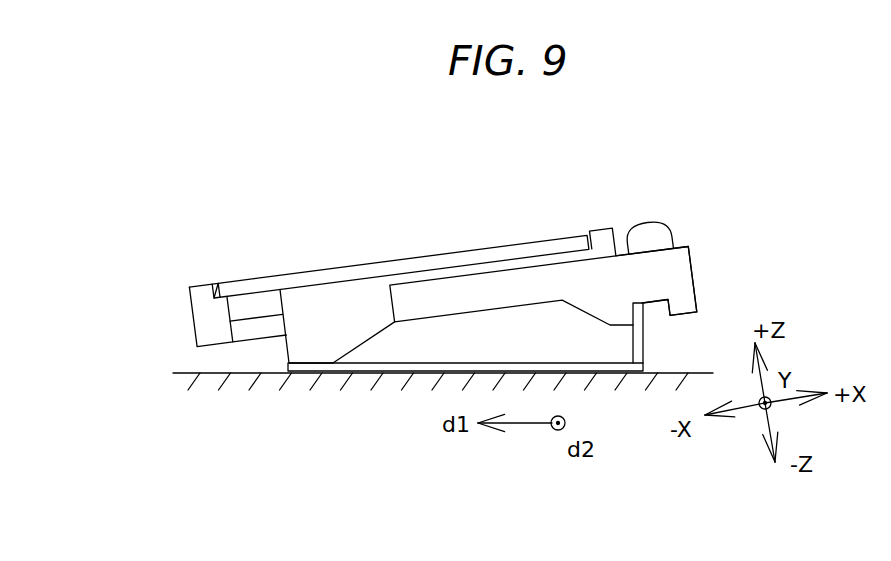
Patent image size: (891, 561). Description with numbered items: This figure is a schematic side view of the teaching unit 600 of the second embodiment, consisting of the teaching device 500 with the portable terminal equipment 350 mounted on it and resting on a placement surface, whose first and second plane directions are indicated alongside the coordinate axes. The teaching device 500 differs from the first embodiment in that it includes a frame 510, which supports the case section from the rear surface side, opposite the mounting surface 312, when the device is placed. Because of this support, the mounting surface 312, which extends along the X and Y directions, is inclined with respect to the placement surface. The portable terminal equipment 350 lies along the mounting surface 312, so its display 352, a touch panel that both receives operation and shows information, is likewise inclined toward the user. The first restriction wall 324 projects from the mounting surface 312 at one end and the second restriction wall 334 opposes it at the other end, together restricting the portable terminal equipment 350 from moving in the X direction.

The mounting surface 312 is at (377, 266).
The first restriction wall 324 is at (591, 231).
The second restriction wall 334 is at (204, 285).
The portable terminal equipment 350 is at (401, 238).
The display 352 is at (323, 270).
The teaching device 500 is at (696, 275).
The frame 510 is at (284, 368).
The teaching unit 600 is at (793, 228).